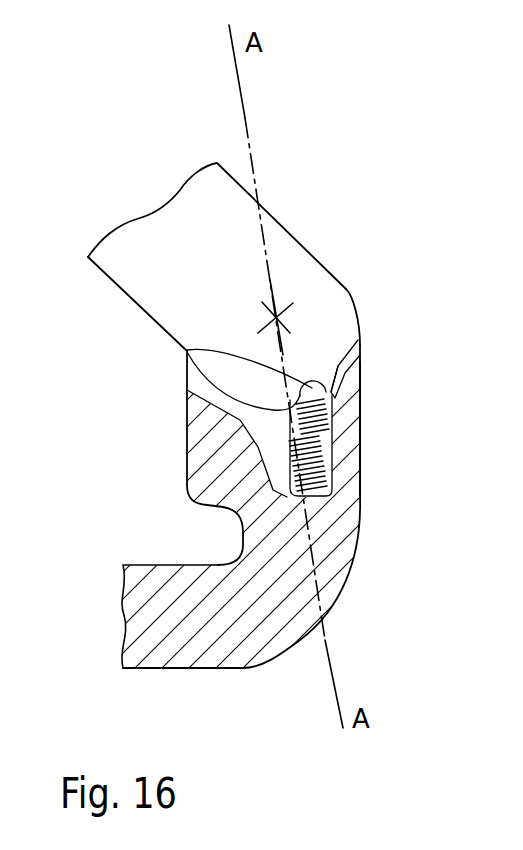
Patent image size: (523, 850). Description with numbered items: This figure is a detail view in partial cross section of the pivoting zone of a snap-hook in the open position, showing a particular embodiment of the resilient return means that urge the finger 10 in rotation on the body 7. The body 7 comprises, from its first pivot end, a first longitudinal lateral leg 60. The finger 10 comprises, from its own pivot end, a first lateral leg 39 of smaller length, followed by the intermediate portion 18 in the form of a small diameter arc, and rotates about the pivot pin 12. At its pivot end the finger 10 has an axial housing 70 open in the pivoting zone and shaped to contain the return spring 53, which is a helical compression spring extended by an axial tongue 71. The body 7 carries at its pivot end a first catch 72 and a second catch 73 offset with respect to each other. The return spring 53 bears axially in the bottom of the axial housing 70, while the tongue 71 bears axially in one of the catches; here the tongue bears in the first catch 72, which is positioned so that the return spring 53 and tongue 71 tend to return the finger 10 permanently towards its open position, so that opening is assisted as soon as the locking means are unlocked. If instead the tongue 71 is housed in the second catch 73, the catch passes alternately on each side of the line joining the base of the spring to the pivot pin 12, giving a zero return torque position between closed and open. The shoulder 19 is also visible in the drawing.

The body 7 is at (125, 297).
The finger 10 is at (340, 606).
The pivot pin 12 is at (276, 318).
The intermediate portion 18 is at (177, 642).
The shoulder of toolholder 19 is at (202, 550).
The first lateral leg 39 is at (337, 532).
The return spring 53 is at (317, 453).
The first longitudinal lateral leg 60 is at (223, 199).
The axial housing 70 is at (277, 425).
The axial tongue 71 is at (333, 377).
The first catch 72 is at (357, 333).
The second catch 73 is at (190, 351).